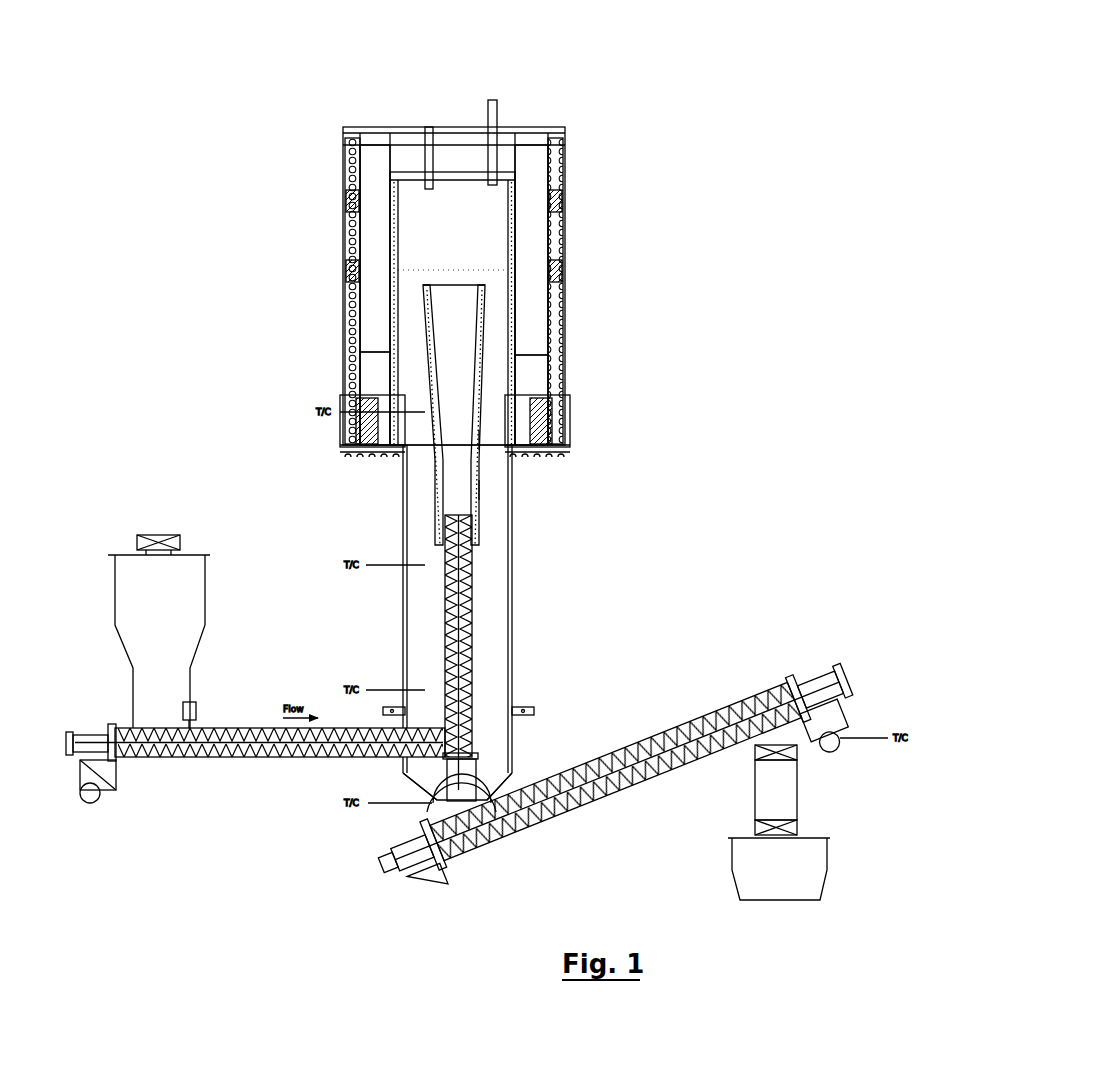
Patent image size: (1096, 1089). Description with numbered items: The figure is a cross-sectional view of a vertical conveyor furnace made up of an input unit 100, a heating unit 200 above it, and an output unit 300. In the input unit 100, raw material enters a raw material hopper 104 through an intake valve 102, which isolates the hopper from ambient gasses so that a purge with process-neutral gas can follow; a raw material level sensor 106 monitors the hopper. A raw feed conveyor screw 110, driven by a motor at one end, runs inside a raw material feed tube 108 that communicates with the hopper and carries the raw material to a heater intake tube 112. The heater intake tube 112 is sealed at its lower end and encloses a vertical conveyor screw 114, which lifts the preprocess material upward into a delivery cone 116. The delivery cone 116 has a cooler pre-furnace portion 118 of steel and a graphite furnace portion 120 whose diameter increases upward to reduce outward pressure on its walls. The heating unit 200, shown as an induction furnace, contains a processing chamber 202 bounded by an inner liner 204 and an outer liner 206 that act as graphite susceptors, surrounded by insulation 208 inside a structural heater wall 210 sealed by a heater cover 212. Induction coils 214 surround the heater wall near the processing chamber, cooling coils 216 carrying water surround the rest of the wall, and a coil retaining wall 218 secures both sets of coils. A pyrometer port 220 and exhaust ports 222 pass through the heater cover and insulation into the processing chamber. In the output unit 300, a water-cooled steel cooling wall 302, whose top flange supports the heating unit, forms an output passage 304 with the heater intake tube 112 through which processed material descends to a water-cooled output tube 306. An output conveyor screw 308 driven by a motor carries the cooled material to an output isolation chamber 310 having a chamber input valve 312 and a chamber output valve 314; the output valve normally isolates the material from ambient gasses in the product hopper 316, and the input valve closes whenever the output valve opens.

The input unit 100 is at (222, 462).
The intake valve 102 is at (150, 533).
The raw material hopper 104 is at (172, 614).
The raw material level sensor 106 is at (195, 703).
The raw material feed tube 108 is at (185, 760).
The raw feed conveyor screw 110 is at (245, 760).
The heater intake tube 112 is at (510, 640).
The vertical conveyor screw 114 is at (472, 688).
The delivery cone 116 is at (482, 440).
The pre-furnace portion 118 is at (480, 490).
The furnace portion 120 is at (480, 392).
The heating unit 200 is at (622, 172).
The processing chamber 202 is at (456, 245).
The inner liner 204 is at (400, 278).
The outer liner 206 is at (390, 238).
The insulation 208 is at (380, 155).
The structural heater wall 210 is at (358, 296).
The heater cover 212 is at (403, 130).
The induction coils 214 is at (352, 282).
The cooling coils 216 is at (560, 150).
The coil retaining wall 218 is at (342, 200).
The pyrometer port 220 is at (430, 125).
The exhaust ports 222 is at (498, 98).
The output unit 300 is at (655, 600).
The cooling wall 302 is at (405, 530).
The output passage 304 is at (430, 607).
The output tube 306 is at (548, 830).
The output conveyor screw 308 is at (640, 775).
The output isolation chamber 310 is at (800, 785).
The chamber input valve 312 is at (750, 760).
The chamber output valve 314 is at (800, 822).
The product hopper 316 is at (730, 868).